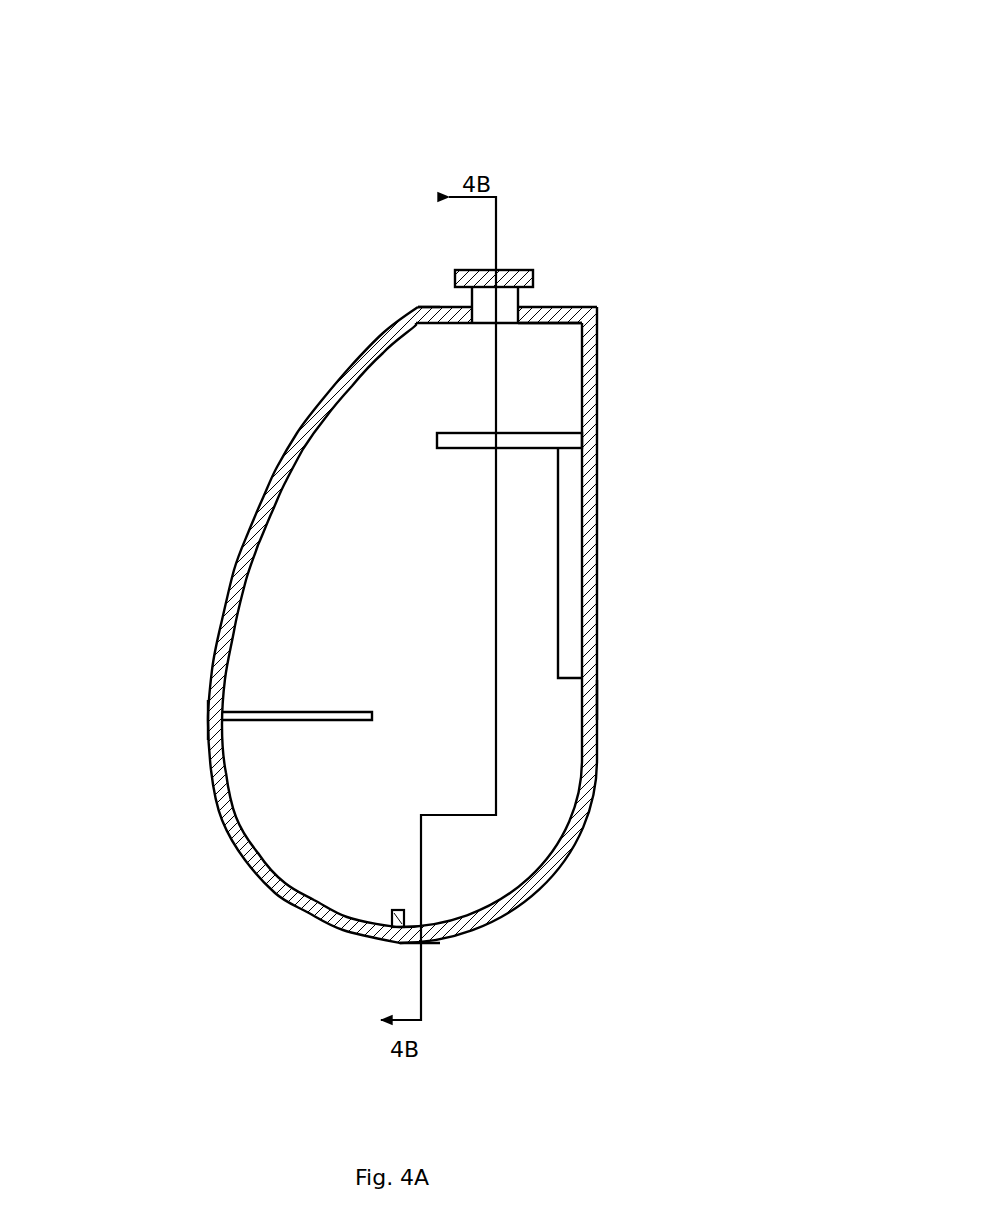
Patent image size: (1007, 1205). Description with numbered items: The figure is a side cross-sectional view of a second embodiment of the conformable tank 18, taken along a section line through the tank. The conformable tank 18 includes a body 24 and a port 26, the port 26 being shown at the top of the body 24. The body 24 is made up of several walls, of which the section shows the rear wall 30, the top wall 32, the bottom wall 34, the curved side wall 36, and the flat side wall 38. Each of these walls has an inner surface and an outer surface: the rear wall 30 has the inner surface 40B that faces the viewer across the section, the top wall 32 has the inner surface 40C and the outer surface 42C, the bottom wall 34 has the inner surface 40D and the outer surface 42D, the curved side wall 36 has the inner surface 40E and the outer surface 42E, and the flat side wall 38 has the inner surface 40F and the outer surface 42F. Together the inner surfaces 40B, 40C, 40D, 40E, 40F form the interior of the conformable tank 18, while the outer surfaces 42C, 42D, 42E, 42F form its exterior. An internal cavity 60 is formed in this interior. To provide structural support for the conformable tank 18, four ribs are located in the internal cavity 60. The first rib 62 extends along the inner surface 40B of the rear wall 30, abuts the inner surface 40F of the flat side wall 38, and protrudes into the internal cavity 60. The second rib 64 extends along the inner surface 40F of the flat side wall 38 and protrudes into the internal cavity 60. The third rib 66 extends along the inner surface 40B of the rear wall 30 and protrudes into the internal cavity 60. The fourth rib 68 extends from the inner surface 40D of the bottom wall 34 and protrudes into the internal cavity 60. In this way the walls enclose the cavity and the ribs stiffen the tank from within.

The conformable tank 18 is at (745, 112).
The body 24 is at (420, 620).
The port 26 is at (521, 269).
The rear wall 30 is at (538, 388).
The top wall 32 is at (432, 307).
The bottom wall 34 is at (447, 944).
The curved side wall 36 is at (207, 667).
The flat side wall 38 is at (598, 693).
The inner surface 40B is at (399, 579).
The inner surface 40C is at (540, 330).
The inner surface 40D is at (325, 901).
The inner surface 40E is at (236, 633).
The inner surface 40F is at (576, 721).
The outer surface 42C is at (559, 302).
The outer surface 42D is at (328, 936).
The outer surface 42E is at (266, 472).
The outer surface 42F is at (600, 503).
The internal cavity 60 is at (528, 799).
The first rib 62 is at (540, 436).
The second rib 64 is at (568, 575).
The third rib 66 is at (262, 714).
The fourth rib 68 is at (405, 916).